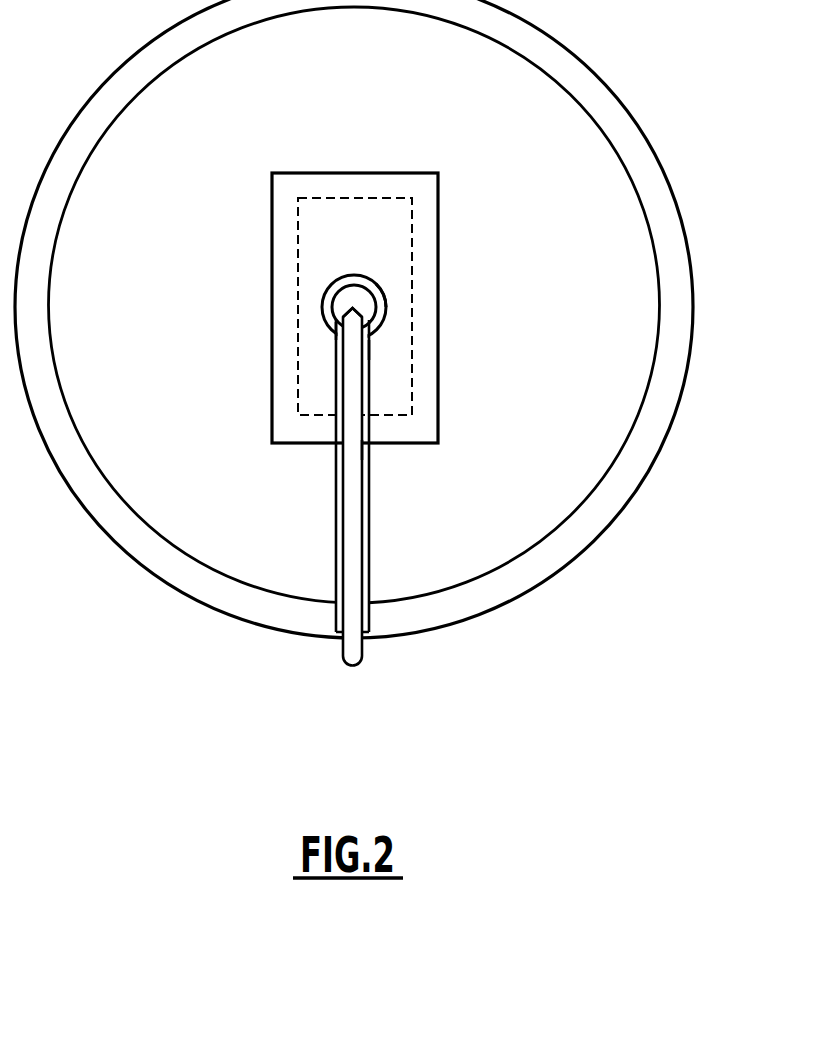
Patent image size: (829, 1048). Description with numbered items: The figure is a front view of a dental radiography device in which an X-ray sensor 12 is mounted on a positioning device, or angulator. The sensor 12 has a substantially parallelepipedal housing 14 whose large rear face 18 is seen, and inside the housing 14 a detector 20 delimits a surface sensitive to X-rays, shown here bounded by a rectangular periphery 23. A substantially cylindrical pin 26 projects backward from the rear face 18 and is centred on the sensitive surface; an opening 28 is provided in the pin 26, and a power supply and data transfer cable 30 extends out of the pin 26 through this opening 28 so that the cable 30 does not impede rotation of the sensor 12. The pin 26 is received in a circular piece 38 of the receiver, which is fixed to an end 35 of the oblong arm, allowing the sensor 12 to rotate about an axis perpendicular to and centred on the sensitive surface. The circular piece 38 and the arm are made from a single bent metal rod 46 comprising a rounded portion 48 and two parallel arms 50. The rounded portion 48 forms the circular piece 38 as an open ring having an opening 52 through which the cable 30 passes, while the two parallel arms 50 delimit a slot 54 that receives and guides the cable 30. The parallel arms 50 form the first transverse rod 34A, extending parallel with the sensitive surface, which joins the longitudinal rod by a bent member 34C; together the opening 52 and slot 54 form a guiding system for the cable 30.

The sensor 12 is at (474, 289).
The housing 14 is at (326, 272).
The large rear face 18 is at (298, 178).
The detector 20 is at (391, 261).
The rectangular periphery 23 is at (415, 215).
The pin 26 is at (334, 300).
The opening 28 is at (319, 337).
The power supply and data transfer cable 30 is at (354, 507).
The first transverse rod 34A is at (384, 561).
The bent member 34C is at (369, 655).
The end of the arm 35 is at (400, 349).
The circular piece 38 is at (387, 312).
The bent metal rod 46 is at (336, 510).
The rounded portion 48 is at (338, 266).
The parallel arms 50 is at (361, 507).
The opening 52 is at (345, 340).
The slot 54 is at (386, 440).